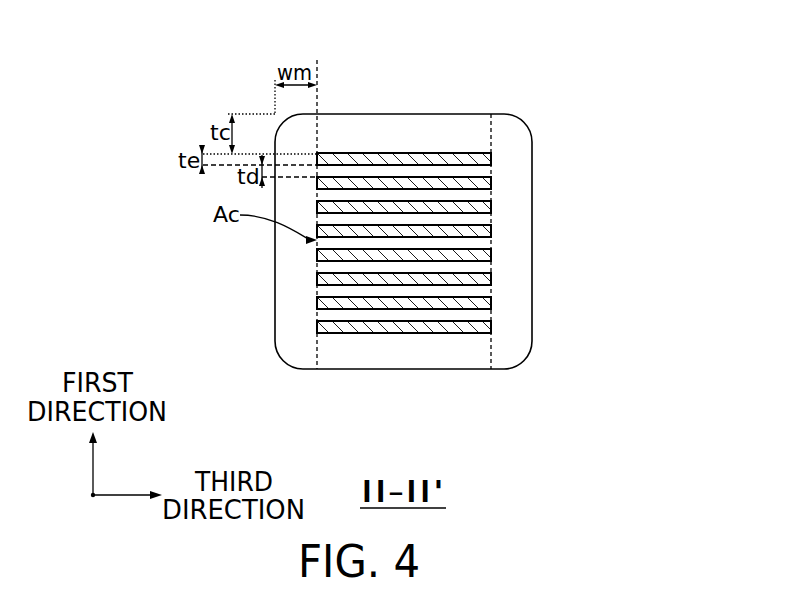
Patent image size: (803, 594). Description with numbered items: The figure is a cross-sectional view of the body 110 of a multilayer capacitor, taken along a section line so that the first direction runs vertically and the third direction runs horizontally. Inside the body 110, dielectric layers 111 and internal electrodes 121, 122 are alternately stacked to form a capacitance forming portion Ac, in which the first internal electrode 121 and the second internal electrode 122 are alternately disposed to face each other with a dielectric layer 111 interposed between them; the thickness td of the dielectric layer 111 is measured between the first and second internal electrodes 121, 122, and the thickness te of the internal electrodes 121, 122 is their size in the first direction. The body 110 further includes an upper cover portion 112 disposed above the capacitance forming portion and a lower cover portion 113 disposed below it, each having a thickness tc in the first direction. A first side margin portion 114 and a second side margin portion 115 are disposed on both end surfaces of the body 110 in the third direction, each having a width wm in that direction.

The body 110 is at (388, 113).
The dielectric layer 111 is at (483, 193).
The upper cover portion 112 is at (337, 127).
The lower cover portion 113 is at (370, 353).
The first side margin portion 114 is at (281, 278).
The second side margin portion 115 is at (523, 273).
The first internal electrode 121 is at (438, 155).
The second internal electrode 122 is at (460, 183).